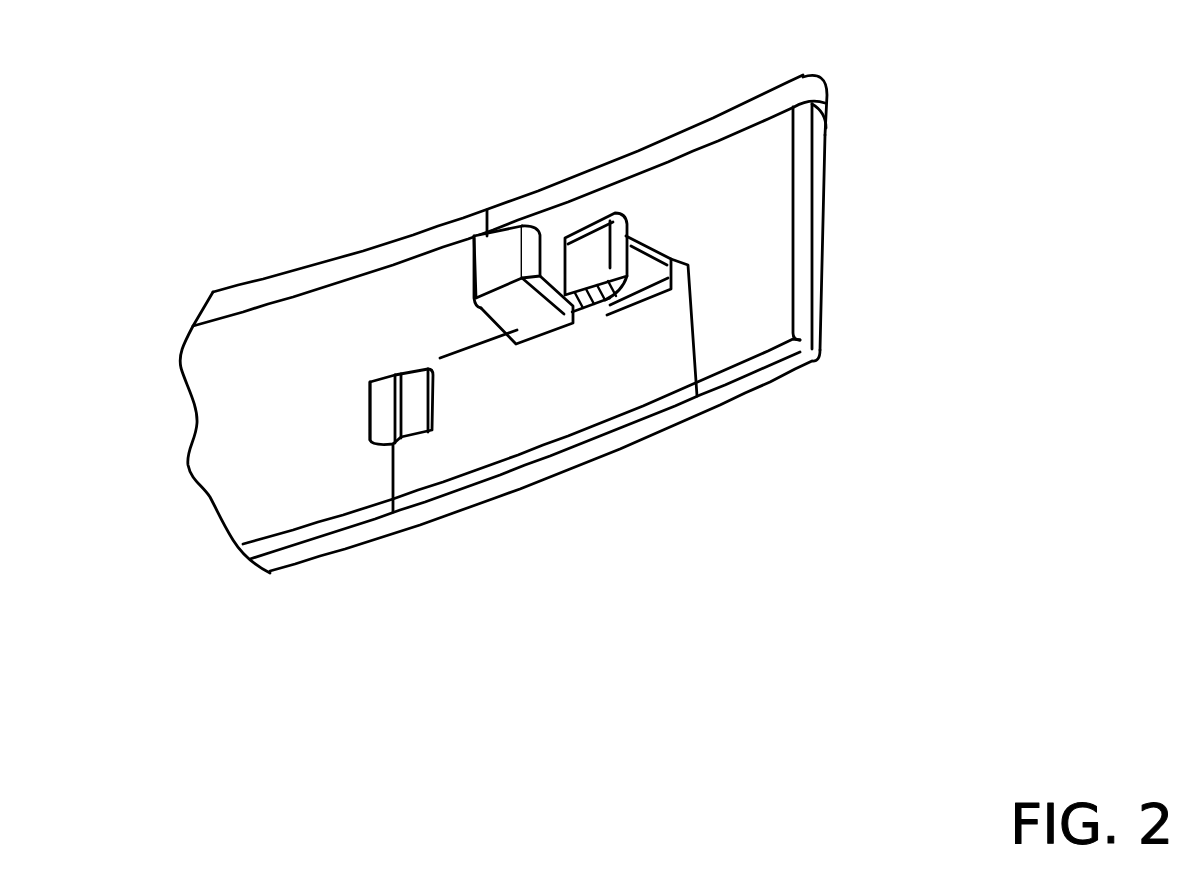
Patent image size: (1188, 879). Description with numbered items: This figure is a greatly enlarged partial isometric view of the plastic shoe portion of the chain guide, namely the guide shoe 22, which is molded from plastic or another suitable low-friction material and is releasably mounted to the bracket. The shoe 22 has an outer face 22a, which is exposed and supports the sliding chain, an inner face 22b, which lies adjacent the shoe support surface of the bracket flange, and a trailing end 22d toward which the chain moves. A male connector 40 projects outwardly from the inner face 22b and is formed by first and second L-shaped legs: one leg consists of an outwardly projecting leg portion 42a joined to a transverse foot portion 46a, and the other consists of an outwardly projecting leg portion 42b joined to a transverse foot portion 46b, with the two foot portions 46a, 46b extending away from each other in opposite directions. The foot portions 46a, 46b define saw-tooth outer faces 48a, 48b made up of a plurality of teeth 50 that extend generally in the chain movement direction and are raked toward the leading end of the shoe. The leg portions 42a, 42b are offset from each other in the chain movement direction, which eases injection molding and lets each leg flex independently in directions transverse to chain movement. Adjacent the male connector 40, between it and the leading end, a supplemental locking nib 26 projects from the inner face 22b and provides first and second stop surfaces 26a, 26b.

The guide shoe 22 is at (445, 375).
The outer face 22a is at (348, 545).
The inner face 22b is at (268, 502).
The trailing end 22d is at (783, 368).
The supplemental locking nib 26 is at (376, 502).
The first stop surface 26a is at (372, 402).
The second stop surface 26b is at (384, 443).
The male connector 40 is at (592, 340).
The leg portion 42a is at (527, 322).
The leg portion 42b is at (635, 288).
The foot portion 46a is at (487, 263).
The foot portion 46b is at (600, 250).
The saw-tooth outer face 48a is at (469, 197).
The saw-tooth outer face 48b is at (575, 336).
The teeth 50 is at (571, 222).